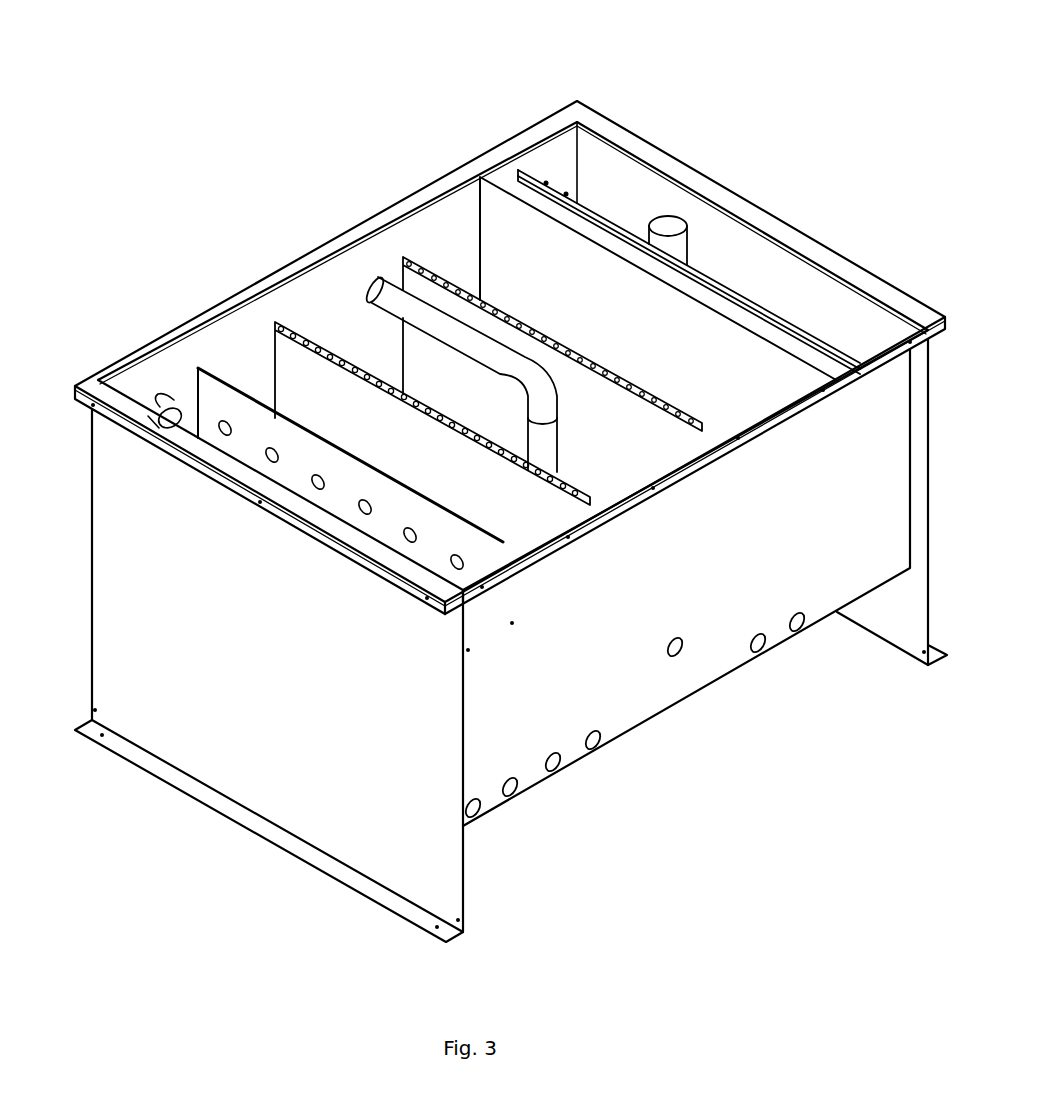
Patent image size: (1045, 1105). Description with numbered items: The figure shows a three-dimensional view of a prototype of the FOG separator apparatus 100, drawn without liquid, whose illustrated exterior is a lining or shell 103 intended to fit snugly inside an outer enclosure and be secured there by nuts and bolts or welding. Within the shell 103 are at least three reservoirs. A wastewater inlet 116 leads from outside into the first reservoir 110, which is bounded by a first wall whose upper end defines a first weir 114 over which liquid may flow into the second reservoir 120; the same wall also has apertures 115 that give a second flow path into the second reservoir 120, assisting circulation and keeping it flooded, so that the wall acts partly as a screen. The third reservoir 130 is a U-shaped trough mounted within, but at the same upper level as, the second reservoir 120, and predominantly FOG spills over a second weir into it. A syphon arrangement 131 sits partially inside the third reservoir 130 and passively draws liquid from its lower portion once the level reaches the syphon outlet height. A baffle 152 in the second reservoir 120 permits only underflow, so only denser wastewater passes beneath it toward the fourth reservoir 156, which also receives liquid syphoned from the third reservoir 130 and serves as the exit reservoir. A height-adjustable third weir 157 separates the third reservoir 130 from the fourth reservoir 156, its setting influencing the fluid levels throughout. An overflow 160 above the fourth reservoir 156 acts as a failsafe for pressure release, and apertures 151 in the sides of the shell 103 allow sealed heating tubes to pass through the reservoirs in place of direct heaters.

The FOG separator apparatus 100 is at (288, 84).
The lining or shell 103 is at (118, 533).
The first reservoir 110 is at (251, 416).
The first weir 114 is at (323, 438).
The apertures 115 is at (362, 509).
The wastewater inlet 116 is at (168, 396).
The second reservoir 120 is at (327, 366).
The third reservoir 130 is at (343, 270).
The syphon arrangement 131 is at (451, 298).
The apertures 151 is at (604, 743).
The baffle 152 is at (738, 378).
The fourth reservoir 156 is at (630, 172).
The third weir 157 is at (703, 271).
The overflow 160 is at (671, 218).